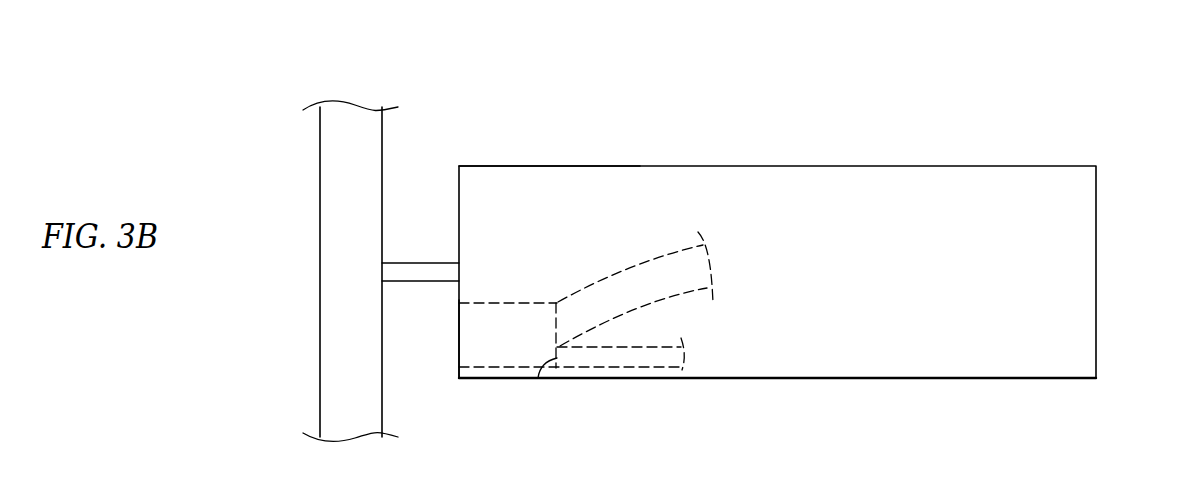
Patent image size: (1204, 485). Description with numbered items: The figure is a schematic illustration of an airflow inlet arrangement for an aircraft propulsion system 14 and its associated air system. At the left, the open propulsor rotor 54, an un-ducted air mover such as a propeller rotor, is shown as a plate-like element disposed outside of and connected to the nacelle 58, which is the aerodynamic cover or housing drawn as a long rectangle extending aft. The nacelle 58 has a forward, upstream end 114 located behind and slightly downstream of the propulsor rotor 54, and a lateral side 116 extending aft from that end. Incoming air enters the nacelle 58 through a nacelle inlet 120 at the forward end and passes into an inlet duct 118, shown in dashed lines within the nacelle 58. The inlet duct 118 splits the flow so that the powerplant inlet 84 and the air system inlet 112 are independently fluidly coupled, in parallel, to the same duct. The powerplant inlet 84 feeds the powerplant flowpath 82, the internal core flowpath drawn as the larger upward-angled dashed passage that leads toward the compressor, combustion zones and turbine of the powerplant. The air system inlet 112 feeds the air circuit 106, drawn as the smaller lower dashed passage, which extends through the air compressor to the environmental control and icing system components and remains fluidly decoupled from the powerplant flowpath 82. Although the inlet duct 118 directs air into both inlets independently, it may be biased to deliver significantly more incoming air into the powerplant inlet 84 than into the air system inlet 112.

The aircraft propulsion system 14 is at (265, 100).
The propulsor rotor 54 is at (320, 195).
The nacelle 58 is at (748, 165).
The powerplant flowpath 82 is at (638, 262).
The powerplant inlet 84 is at (556, 325).
The air circuit 106 is at (647, 368).
The air system inlet 112 is at (538, 368).
The forward upstream end 114 is at (459, 200).
The lateral side 116 is at (932, 290).
The inlet duct 118 is at (500, 368).
The nacelle inlet 120 is at (459, 347).